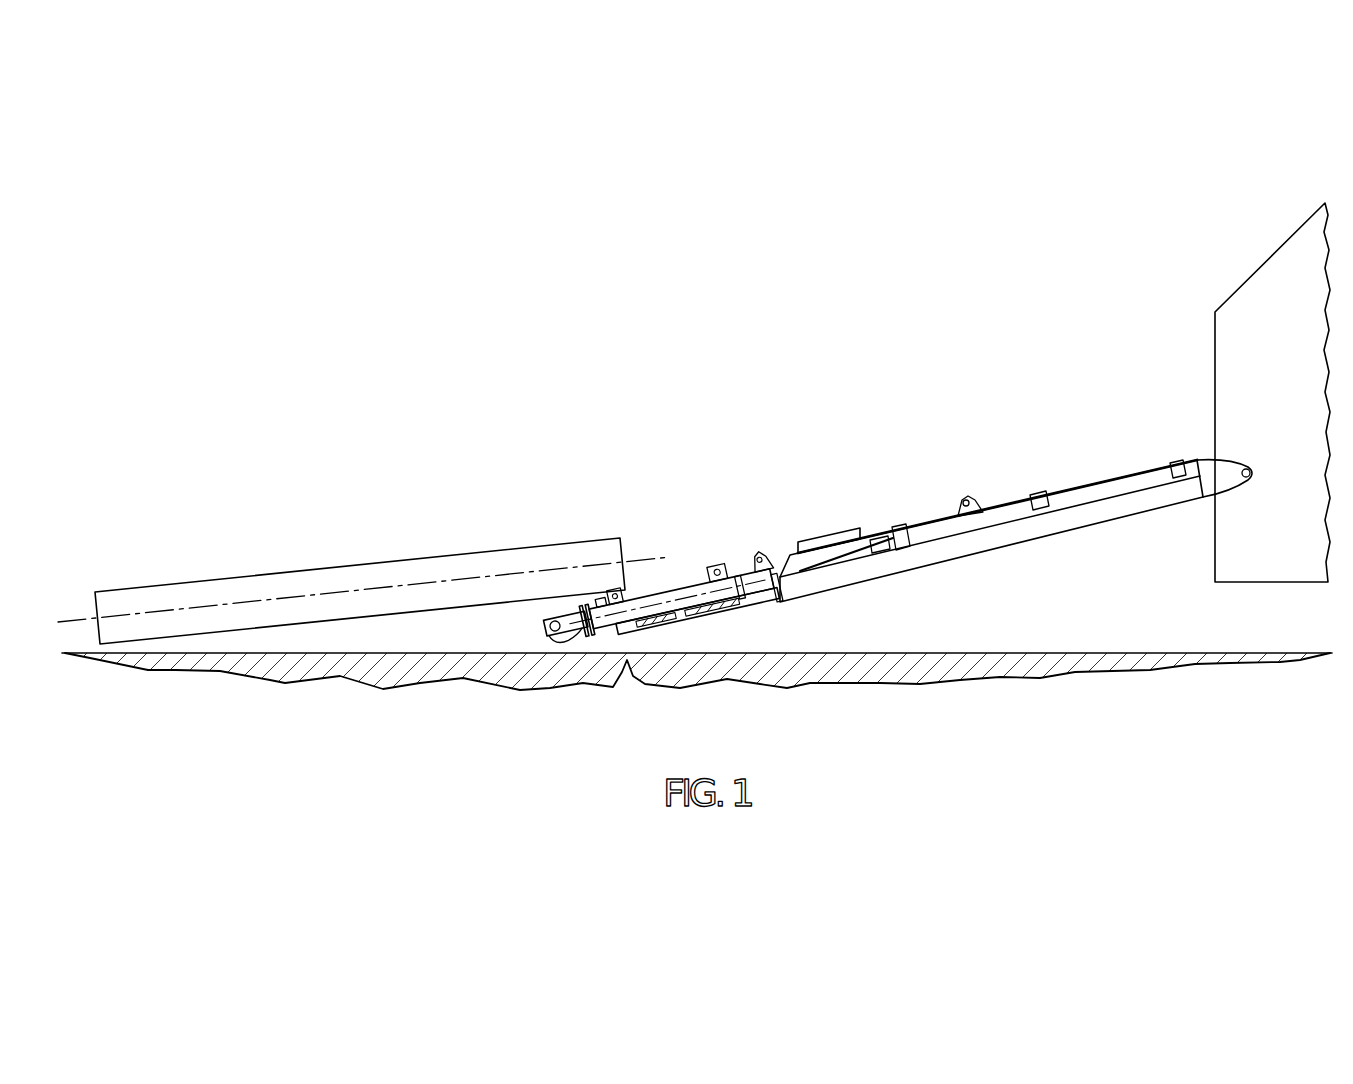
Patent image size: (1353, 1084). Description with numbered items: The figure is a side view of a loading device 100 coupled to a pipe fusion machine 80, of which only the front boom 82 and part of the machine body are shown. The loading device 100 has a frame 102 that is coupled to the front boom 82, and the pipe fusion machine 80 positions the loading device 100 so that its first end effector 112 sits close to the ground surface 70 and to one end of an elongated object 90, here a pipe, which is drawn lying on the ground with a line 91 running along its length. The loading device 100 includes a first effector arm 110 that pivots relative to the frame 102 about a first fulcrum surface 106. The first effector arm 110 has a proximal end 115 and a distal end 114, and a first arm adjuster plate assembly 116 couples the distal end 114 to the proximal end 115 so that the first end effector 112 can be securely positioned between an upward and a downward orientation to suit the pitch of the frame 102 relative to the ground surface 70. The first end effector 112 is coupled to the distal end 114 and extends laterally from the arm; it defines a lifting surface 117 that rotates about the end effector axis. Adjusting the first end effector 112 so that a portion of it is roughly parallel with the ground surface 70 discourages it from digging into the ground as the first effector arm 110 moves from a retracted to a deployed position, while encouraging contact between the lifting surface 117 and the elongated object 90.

The ground surface 70 is at (818, 680).
The pipe fusion machine 80 is at (1258, 372).
The front boom 82 is at (1016, 544).
The elongated object 90 is at (355, 563).
The pipe axis 91 is at (64, 621).
The loading device 100 is at (436, 324).
The frame 102 is at (653, 628).
The first fulcrum surface 106 is at (759, 557).
The first effector arm 110 is at (629, 663).
The first end effector 112 is at (485, 685).
The distal end 114 is at (578, 643).
The proximal end 115 is at (709, 603).
The first arm adjuster plate assembly 116 is at (604, 642).
The lifting surface 117 is at (546, 632).